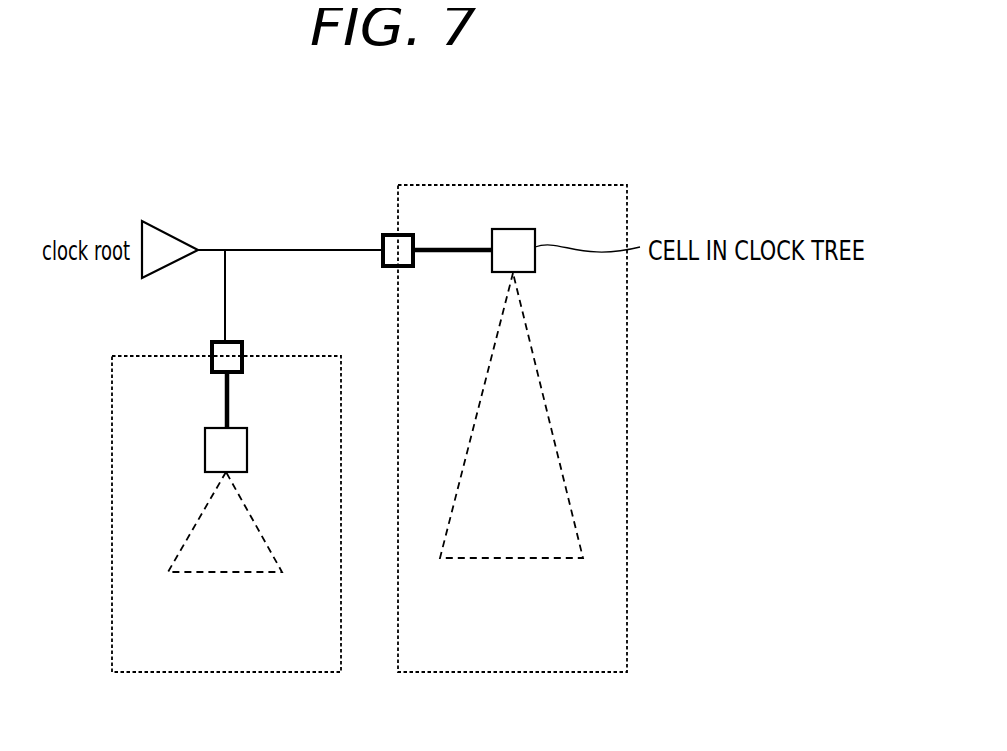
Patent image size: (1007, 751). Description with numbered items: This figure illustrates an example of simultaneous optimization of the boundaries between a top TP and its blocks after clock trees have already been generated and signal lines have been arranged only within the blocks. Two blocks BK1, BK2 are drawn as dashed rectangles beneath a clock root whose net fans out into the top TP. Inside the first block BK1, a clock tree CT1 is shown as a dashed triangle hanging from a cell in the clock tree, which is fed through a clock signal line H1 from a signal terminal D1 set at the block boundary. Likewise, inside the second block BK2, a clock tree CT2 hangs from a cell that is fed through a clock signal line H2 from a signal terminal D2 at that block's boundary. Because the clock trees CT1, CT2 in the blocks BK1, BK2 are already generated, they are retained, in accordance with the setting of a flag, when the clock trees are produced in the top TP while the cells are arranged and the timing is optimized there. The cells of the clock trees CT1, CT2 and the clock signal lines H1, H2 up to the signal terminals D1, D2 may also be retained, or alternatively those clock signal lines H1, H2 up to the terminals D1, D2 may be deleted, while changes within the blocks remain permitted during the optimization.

The top TP is at (618, 139).
The block BK1 is at (508, 672).
The block BK2 is at (218, 672).
The signal terminal D1 is at (385, 234).
The signal terminal D2 is at (211, 342).
The clock signal line H1 is at (452, 249).
The clock signal line H2 is at (226, 403).
The clock tree CT1 is at (549, 417).
The clock tree CT2 is at (202, 515).